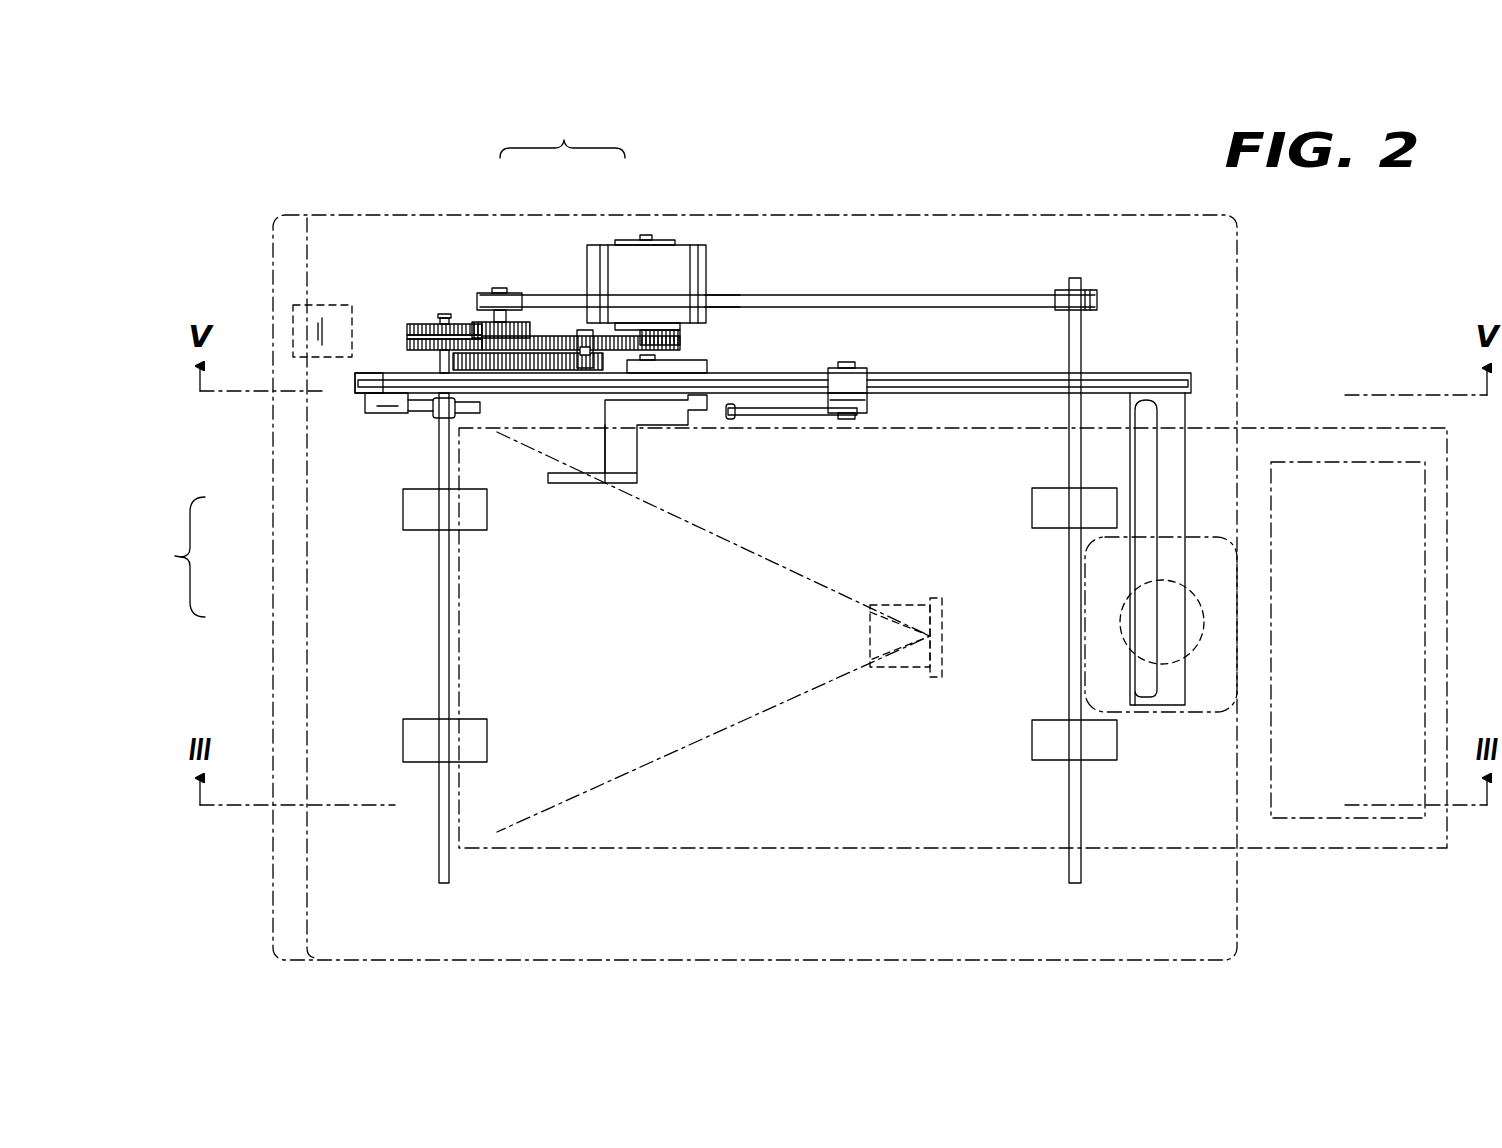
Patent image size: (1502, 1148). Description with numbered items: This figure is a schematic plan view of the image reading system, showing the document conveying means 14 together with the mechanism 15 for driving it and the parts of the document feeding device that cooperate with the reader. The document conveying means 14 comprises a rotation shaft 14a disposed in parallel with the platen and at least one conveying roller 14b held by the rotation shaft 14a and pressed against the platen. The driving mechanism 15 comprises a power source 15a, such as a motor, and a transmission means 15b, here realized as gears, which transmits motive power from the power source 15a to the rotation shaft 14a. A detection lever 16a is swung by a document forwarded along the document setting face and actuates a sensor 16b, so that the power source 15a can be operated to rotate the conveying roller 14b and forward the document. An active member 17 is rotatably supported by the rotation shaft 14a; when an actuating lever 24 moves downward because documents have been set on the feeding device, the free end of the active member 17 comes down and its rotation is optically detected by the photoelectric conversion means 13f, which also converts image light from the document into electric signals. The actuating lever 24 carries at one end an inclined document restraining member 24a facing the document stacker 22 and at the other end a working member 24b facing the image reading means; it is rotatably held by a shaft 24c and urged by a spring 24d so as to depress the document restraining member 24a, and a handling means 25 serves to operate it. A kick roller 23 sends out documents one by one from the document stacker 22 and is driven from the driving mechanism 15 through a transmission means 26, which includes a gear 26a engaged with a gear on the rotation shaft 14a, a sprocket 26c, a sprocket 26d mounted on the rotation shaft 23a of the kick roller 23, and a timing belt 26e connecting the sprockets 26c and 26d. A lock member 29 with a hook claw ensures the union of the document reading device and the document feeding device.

The photoelectric conversion means 13f is at (938, 645).
The document conveying means 14 is at (316, 638).
The rotation shaft 14a is at (439, 592).
The conveying roller 14b is at (403, 504).
The mechanism for driving the document conveying means 15 is at (579, 230).
The power source 15a is at (610, 268).
The transmission means 15b is at (578, 340).
The detection lever 16a is at (638, 455).
The sensor 16b is at (708, 361).
The active member 17 is at (383, 414).
The document stacker 22 is at (1285, 849).
The kick roller 23 is at (1060, 528).
The rotation shaft of the kick roller 23a is at (1069, 622).
The actuating lever 24 is at (920, 372).
The document restraining member 24a is at (1178, 413).
The working member 24b is at (378, 372).
The shaft 24c is at (853, 363).
The spring 24d is at (783, 407).
The handling means 25 is at (1192, 536).
The transmission means 26 is at (1012, 290).
The gear 26a is at (415, 323).
The sprocket 26c is at (477, 295).
The sprocket 26d is at (1090, 289).
The timing belt 26e is at (717, 297).
The lock member 29 is at (293, 310).